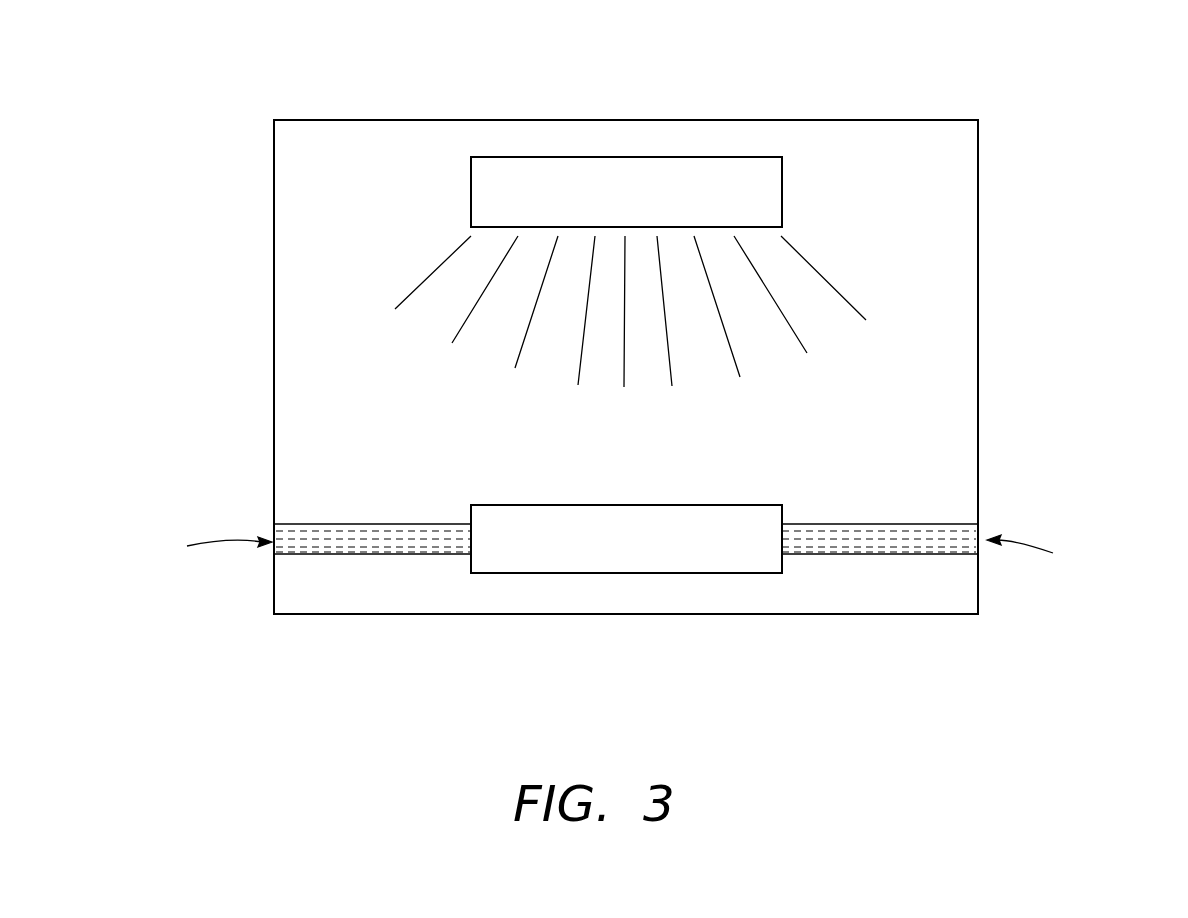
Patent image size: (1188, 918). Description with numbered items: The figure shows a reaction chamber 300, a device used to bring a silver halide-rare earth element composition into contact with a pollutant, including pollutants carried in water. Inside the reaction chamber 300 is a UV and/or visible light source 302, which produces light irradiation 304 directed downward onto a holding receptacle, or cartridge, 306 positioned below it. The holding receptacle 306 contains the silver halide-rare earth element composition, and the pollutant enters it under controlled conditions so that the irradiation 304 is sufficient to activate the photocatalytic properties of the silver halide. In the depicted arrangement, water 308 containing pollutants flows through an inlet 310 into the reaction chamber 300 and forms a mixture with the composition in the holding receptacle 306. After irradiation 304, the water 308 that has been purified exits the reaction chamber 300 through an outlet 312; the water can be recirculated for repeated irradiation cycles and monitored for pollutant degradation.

The reaction chamber 300 is at (1043, 72).
The UV and/or visible light source 302 is at (594, 180).
The light irradiation 304 is at (837, 289).
The holding receptacle 306 is at (602, 552).
The water 308 is at (415, 543).
The inlet 310 is at (201, 548).
The outlet 312 is at (1043, 552).